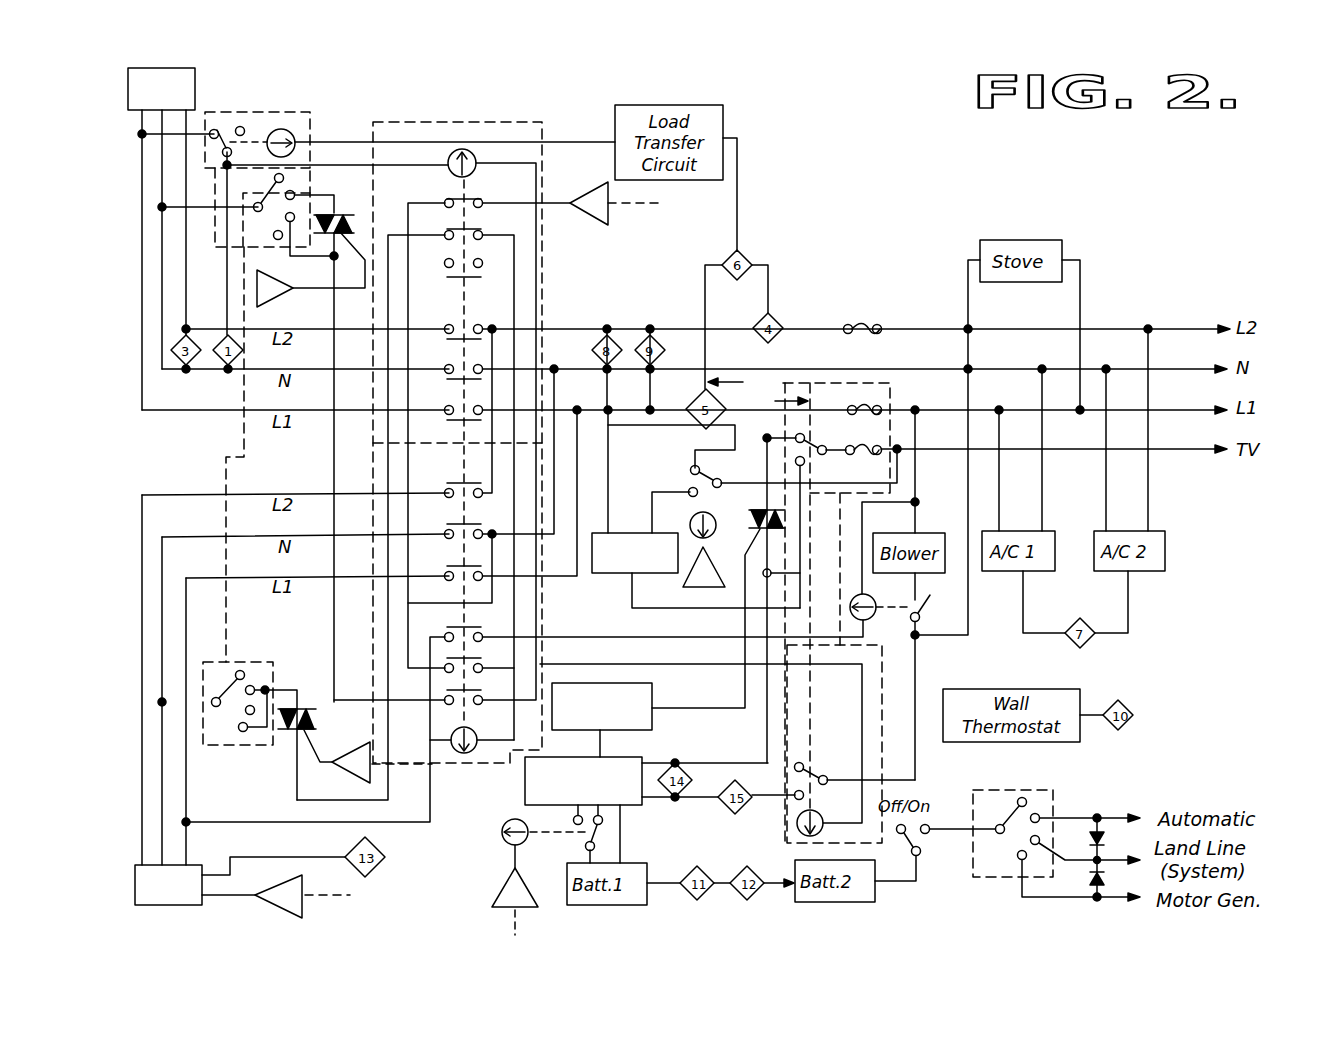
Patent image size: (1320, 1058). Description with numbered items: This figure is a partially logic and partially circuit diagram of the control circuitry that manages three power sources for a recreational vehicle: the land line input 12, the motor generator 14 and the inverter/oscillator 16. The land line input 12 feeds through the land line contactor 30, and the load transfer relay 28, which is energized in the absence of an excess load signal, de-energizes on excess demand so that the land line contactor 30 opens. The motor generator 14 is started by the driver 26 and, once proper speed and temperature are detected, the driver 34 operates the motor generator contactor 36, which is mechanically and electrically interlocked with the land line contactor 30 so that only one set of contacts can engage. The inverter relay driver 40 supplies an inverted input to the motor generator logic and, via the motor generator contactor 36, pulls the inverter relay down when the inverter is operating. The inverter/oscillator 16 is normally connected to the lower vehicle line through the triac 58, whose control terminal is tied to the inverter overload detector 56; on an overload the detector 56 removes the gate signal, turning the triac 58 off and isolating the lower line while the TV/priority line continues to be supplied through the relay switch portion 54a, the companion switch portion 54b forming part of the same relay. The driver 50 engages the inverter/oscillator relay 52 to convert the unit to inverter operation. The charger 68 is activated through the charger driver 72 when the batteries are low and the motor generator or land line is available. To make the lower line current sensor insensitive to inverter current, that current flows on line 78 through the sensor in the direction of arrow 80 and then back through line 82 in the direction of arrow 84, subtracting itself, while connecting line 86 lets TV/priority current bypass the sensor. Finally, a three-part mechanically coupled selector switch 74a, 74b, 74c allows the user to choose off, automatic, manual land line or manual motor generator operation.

The land line input 12 is at (195, 78).
The load transfer relay 28 is at (290, 108).
The land line contactor 30 is at (510, 120).
The inverter relay driver 40 is at (280, 290).
The selector switch part 74a is at (215, 192).
The selector switch part 74b is at (273, 662).
The selector switch part 74c is at (1053, 797).
The driver 34 is at (348, 745).
The motor generator contactor 36 is at (463, 766).
The motor generator 14 is at (135, 878).
The driver 26 is at (270, 918).
The driver 50 is at (494, 890).
The inverter/oscillator relay 52 is at (598, 838).
The inverter/oscillator 16 is at (642, 768).
The inverter overload detector 56 is at (652, 700).
The charger 68 is at (610, 576).
The charger driver 72 is at (738, 545).
The triac 58 is at (752, 506).
The line 82 is at (748, 455).
The connecting line 86 is at (800, 525).
The line 78 is at (741, 381).
The arrow 80 is at (735, 367).
The arrow 84 is at (798, 392).
The relay switch portion 54a is at (878, 383).
The relay switch portion 54b is at (828, 735).